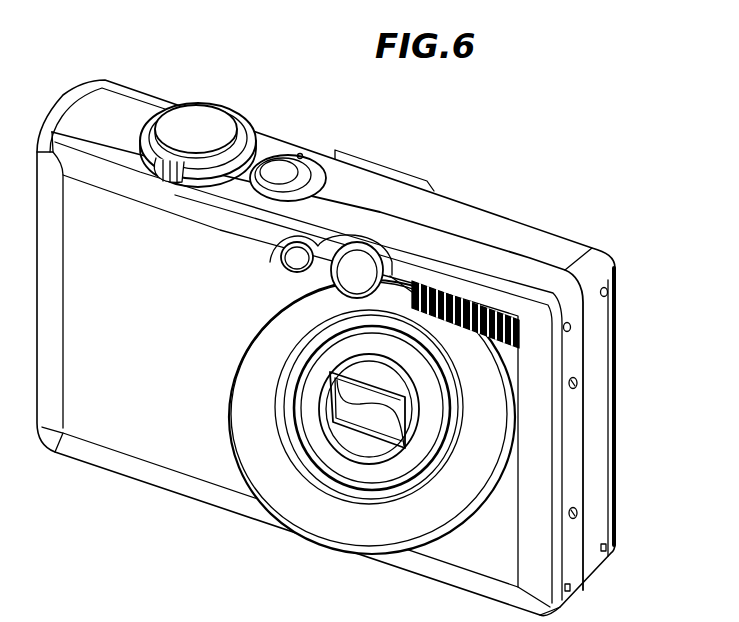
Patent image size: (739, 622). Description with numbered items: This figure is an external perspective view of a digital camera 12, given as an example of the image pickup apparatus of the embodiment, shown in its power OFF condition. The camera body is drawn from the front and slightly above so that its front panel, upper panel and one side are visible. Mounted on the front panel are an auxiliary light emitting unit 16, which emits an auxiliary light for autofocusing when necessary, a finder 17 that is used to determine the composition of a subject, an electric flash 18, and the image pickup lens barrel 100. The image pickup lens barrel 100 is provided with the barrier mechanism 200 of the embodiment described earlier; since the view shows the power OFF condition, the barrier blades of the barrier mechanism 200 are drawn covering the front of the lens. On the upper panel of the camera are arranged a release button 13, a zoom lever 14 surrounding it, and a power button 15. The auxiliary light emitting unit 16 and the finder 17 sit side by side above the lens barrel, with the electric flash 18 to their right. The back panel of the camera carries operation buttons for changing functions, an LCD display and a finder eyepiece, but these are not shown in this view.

The digital camera 12 is at (168, 445).
The release button 13 is at (193, 127).
The zoom lever 14 is at (247, 120).
The power button 15 is at (279, 172).
The auxiliary light emitting unit 16 is at (297, 253).
The finder 17 is at (357, 273).
The electric flash 18 is at (460, 297).
The image pickup lens barrel 100 is at (363, 462).
The barrier mechanism 200 is at (355, 418).